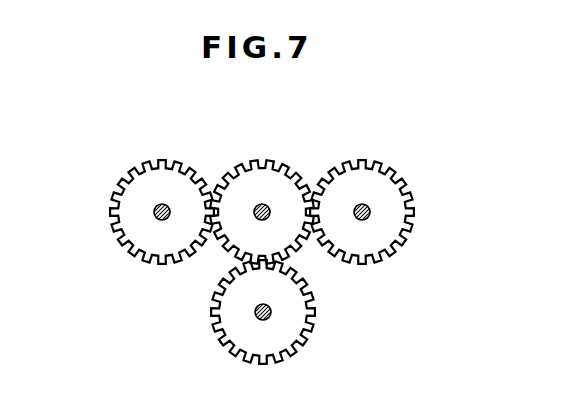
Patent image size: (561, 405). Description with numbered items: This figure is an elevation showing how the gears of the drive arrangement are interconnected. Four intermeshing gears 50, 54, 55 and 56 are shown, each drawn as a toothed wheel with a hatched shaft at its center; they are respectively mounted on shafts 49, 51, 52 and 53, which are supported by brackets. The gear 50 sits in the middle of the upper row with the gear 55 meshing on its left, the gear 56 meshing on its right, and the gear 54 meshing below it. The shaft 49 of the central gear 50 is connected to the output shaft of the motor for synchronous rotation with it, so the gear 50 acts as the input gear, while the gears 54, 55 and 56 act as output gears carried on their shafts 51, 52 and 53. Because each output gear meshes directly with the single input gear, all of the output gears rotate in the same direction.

The shaft 49 is at (267, 207).
The gear 50 is at (233, 168).
The shaft 51 is at (271, 312).
The shaft 52 is at (153, 210).
The shaft 53 is at (370, 209).
The gear 54 is at (302, 347).
The gear 55 is at (162, 162).
The gear 56 is at (358, 160).